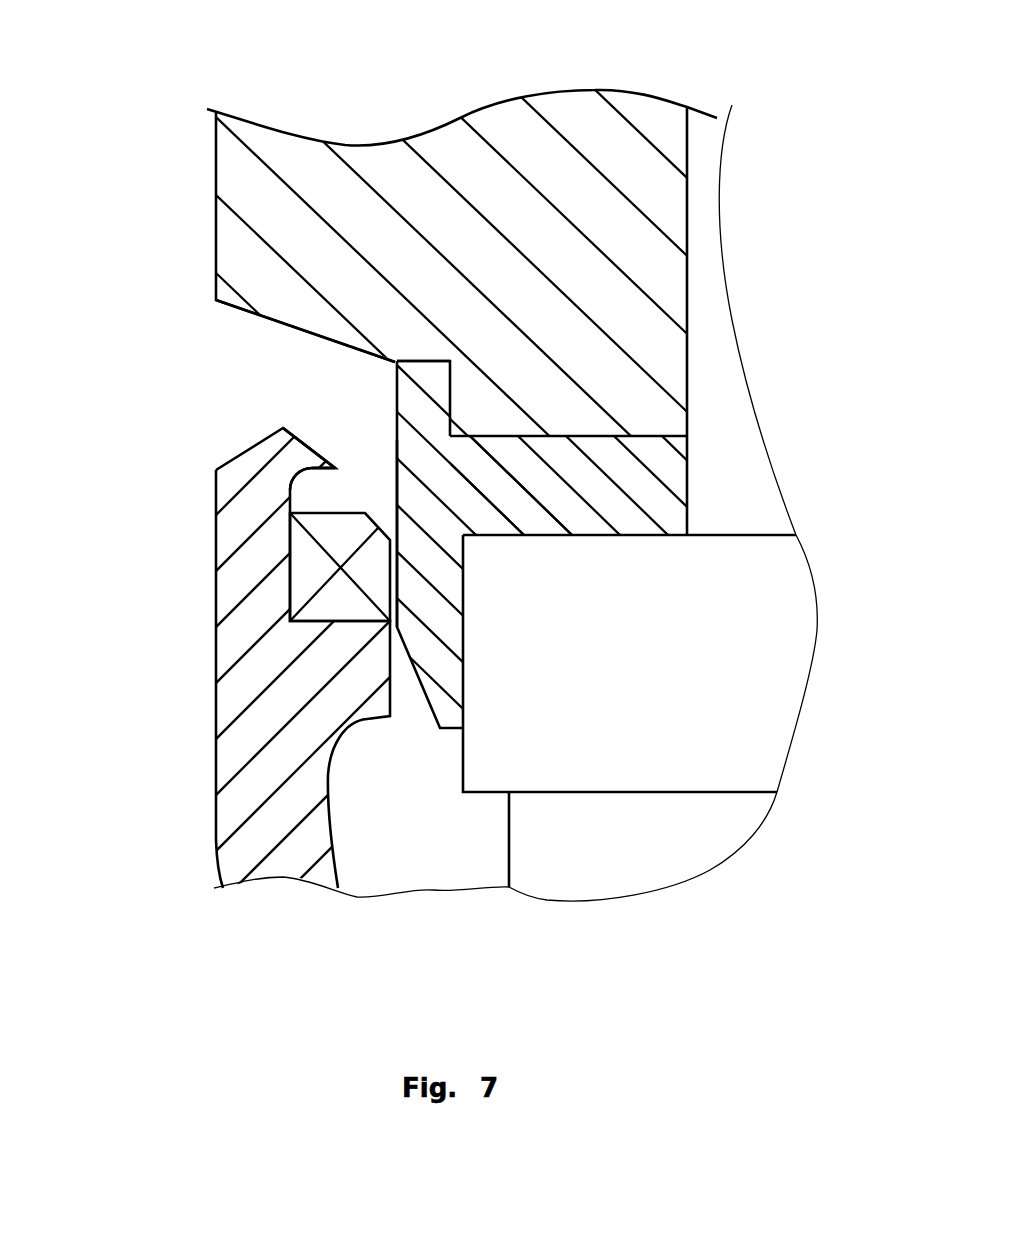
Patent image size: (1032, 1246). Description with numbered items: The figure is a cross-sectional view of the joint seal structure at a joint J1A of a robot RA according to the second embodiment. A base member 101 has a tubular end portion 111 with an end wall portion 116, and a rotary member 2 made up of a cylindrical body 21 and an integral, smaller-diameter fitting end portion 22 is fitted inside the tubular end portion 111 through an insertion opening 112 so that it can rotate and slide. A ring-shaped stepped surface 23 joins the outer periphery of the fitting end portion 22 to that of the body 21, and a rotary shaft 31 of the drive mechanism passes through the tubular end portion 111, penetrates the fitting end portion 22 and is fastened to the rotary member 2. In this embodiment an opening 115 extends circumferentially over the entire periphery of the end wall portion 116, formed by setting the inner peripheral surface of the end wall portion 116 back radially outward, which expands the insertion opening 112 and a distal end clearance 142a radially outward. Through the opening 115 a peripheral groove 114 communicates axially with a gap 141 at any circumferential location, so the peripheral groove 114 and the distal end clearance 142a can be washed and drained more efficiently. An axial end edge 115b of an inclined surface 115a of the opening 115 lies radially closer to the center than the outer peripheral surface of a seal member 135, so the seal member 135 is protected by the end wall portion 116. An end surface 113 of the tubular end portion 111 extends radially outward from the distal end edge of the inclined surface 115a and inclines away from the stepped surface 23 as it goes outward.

The rotary member 2 is at (656, 88).
The body 21 is at (643, 243).
The fitting end portion 22 is at (665, 472).
The stepped surface 23 is at (255, 313).
The rotary shaft 31 is at (668, 865).
The base member 101 is at (328, 890).
The tubular end portion 111 is at (281, 865).
The insertion opening 112 is at (370, 433).
The end surface 113 is at (245, 458).
The peripheral groove 114 is at (365, 492).
The opening 115 is at (383, 450).
The inclined surface 115a is at (320, 453).
The axial end edge 115b is at (340, 492).
The end wall portion 116 is at (307, 458).
The seal member 135 is at (348, 603).
The gap 141 is at (297, 338).
The distal end clearance 142a is at (385, 452).
The robot RA is at (210, 858).
The joint J1A is at (790, 426).